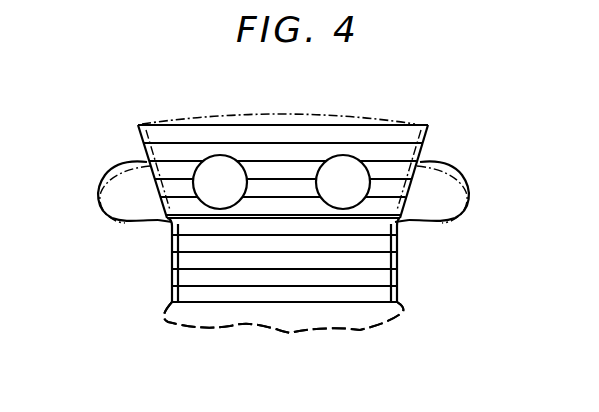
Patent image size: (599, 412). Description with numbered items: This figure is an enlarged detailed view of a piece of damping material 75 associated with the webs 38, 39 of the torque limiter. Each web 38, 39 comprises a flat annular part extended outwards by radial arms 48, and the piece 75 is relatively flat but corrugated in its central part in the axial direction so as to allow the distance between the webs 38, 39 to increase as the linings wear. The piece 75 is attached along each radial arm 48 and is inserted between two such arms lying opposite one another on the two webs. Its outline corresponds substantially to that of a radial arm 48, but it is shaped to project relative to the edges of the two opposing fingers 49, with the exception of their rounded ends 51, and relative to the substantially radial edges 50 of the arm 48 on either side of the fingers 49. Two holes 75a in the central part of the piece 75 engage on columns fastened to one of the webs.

The radial arm 48 is at (397, 88).
The piece of damping material 75 is at (193, 83).
The holes 75a is at (236, 193).
The rounded end 51 is at (94, 203).
The finger 49 is at (150, 228).
The substantially radial edge 50 is at (171, 277).
The web 38 is at (255, 320).
The web 39 is at (284, 317).